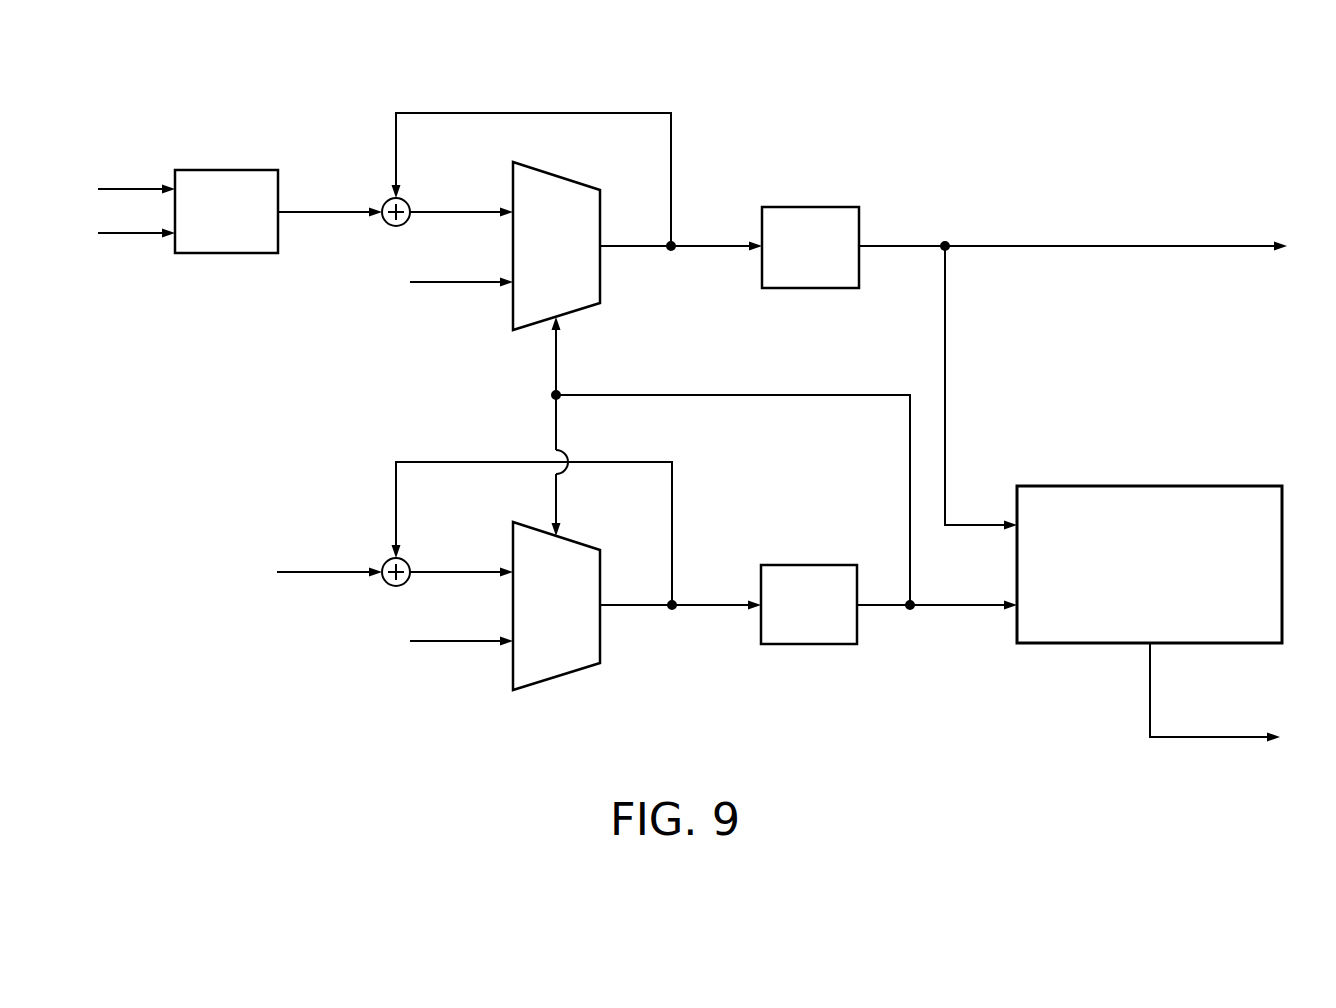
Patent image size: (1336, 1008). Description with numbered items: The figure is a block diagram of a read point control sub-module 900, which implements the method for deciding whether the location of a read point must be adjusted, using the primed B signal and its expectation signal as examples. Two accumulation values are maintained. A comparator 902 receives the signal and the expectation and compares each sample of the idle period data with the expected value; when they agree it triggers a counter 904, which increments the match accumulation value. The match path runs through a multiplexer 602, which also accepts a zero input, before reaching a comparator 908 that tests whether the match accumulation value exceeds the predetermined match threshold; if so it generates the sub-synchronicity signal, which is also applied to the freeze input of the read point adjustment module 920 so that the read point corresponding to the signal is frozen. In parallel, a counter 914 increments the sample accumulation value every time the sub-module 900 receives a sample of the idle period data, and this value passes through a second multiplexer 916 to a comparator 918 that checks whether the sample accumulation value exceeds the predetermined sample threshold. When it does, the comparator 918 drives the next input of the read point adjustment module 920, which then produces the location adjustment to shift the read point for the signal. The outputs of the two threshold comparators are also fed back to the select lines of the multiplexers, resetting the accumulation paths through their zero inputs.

The read point control sub-module 900 is at (1165, 118).
The comparator 902 is at (213, 170).
The counter 904 is at (385, 201).
The multiplexer 602 is at (557, 176).
The comparator 908 is at (808, 207).
The counter 914 is at (385, 561).
The multiplexer 916 is at (580, 545).
The comparator 918 is at (808, 565).
The read point adjustment module 920 is at (1155, 486).